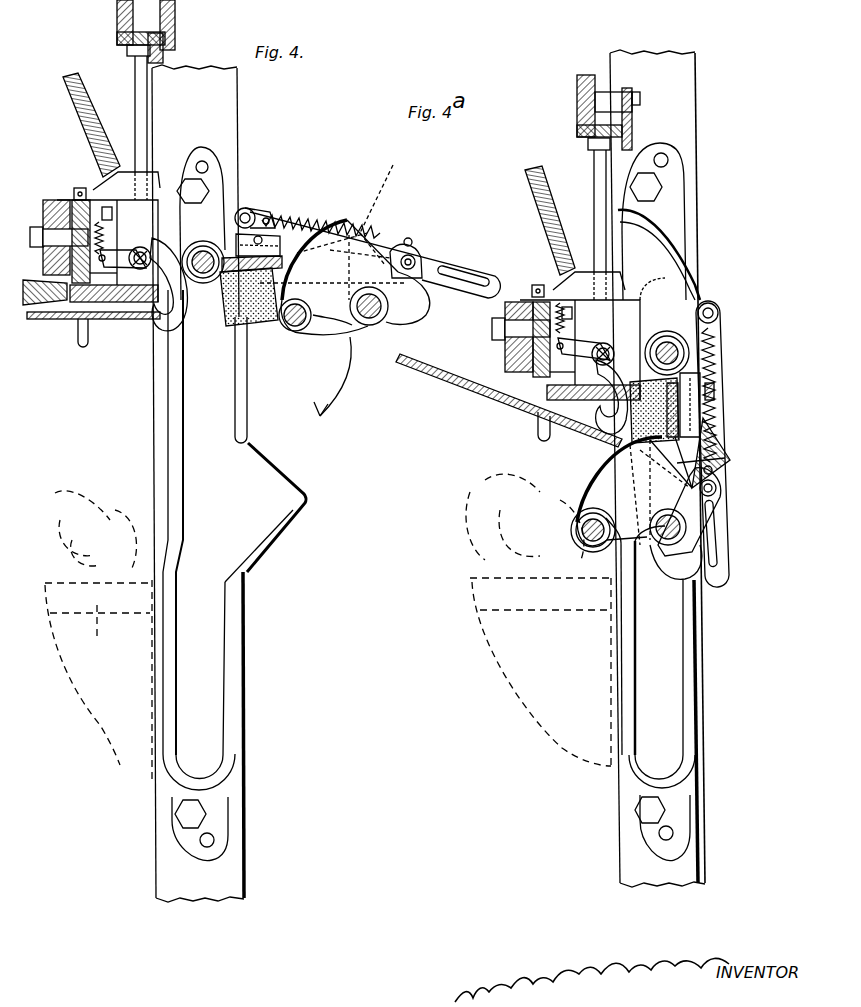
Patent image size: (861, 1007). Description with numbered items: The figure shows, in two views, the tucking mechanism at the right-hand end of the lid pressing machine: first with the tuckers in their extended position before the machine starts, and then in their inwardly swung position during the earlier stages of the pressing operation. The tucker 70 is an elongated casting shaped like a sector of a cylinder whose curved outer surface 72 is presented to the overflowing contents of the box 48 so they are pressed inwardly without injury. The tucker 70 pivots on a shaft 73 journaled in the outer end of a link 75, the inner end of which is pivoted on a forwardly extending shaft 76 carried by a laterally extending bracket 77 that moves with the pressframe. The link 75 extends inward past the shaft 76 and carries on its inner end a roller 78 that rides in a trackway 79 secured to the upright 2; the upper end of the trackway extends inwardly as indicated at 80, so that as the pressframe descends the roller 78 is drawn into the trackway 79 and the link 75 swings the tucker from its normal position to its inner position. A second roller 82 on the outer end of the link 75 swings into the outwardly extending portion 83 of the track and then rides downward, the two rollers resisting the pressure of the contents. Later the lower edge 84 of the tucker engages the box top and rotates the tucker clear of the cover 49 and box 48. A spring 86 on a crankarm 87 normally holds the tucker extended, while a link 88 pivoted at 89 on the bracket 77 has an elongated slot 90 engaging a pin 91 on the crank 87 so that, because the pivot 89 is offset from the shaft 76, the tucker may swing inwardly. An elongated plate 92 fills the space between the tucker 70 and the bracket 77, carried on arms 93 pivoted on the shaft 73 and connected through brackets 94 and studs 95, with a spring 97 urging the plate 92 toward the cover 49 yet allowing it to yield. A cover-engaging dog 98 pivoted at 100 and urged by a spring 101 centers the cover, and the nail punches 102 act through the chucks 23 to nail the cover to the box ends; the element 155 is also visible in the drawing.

In FIG. 4, the upright 2 is at (232, 106).
In FIG. 4a, the upright 2 is at (684, 86).
In FIG. 4, the chuck 23 is at (97, 188).
In FIG. 4a, the chuck 23 is at (570, 268).
In FIG. 4, the box 48 is at (98, 636).
In FIG. 4a, the box 48 is at (525, 620).
In FIG. 4, the cover 49 is at (40, 320).
In FIG. 4a, the cover 49 is at (470, 384).
In FIG. 4, the tucker 70 is at (308, 256).
In FIG. 4a, the tucker 70 is at (585, 500).
In FIG. 4, the curved outer surface 72 is at (340, 216).
In FIG. 4a, the curved outer surface 72 is at (585, 490).
In FIG. 4, the shaft 73 is at (370, 320).
In FIG. 4a, the shaft 73 is at (690, 540).
In FIG. 4, the link 75 is at (386, 209).
In FIG. 4a, the link 75 is at (700, 470).
In FIG. 4, the shaft 76 is at (205, 284).
In FIG. 4a, the shaft 76 is at (688, 353).
In FIG. 4, the bracket 77 is at (228, 198).
In FIG. 4a, the bracket 77 is at (700, 300).
In FIG. 4, the roller 78 is at (157, 178).
In FIG. 4a, the roller 78 is at (664, 282).
In FIG. 4, the trackway 79 is at (214, 674).
In FIG. 4a, the trackway 79 is at (672, 628).
In FIG. 4a, the inwardly extending upper end of trackway 80 is at (618, 224).
In FIG. 4, the roller 82 is at (366, 325).
In FIG. 4a, the roller 82 is at (650, 545).
In FIG. 4, the outwardly extending portion 83 is at (270, 513).
In FIG. 4a, the outwardly extending portion 83 is at (740, 500).
In FIG. 4, the lower edge 84 is at (298, 333).
In FIG. 4a, the lower edge 84 is at (596, 552).
In FIG. 4, the spring 86 is at (382, 230).
In FIG. 4a, the spring 86 is at (716, 437).
In FIG. 4, the crankarm 87 is at (402, 243).
In FIG. 4a, the crankarm 87 is at (722, 520).
In FIG. 4, the link 88 is at (375, 255).
In FIG. 4a, the link 88 is at (730, 564).
In FIG. 4, the pivot 89 is at (255, 210).
In FIG. 4a, the pivot 89 is at (718, 306).
In FIG. 4, the elongated slot 90 is at (458, 292).
In FIG. 4a, the elongated slot 90 is at (722, 530).
In FIG. 4, the pin 91 is at (418, 258).
In FIG. 4a, the pin 91 is at (718, 488).
In FIG. 4, the plate 92 is at (258, 322).
In FIG. 4a, the plate 92 is at (630, 430).
In FIG. 4, the arms 93 is at (335, 320).
In FIG. 4a, the arms 93 is at (725, 455).
In FIG. 4, the brackets 94 is at (292, 200).
In FIG. 4a, the brackets 94 is at (702, 372).
In FIG. 4, the studs 95 is at (304, 215).
In FIG. 4a, the studs 95 is at (716, 390).
In FIG. 4, the spring 97 is at (252, 336).
In FIG. 4a, the spring 97 is at (690, 414).
In FIG. 4, the cover-engaging dog 98 is at (180, 332).
In FIG. 4a, the cover-engaging dog 98 is at (604, 420).
In FIG. 4, the pivot 100 is at (138, 268).
In FIG. 4a, the pivot 100 is at (575, 347).
In FIG. 4, the spring 101 is at (107, 250).
In FIG. 4a, the spring 101 is at (568, 330).
In FIG. 4, the nail punch 102 is at (136, 92).
In FIG. 4a, the nail punch 102 is at (600, 176).
In FIG. 4, the handle lever 155 is at (80, 129).
In FIG. 4a, the handle lever 155 is at (535, 202).